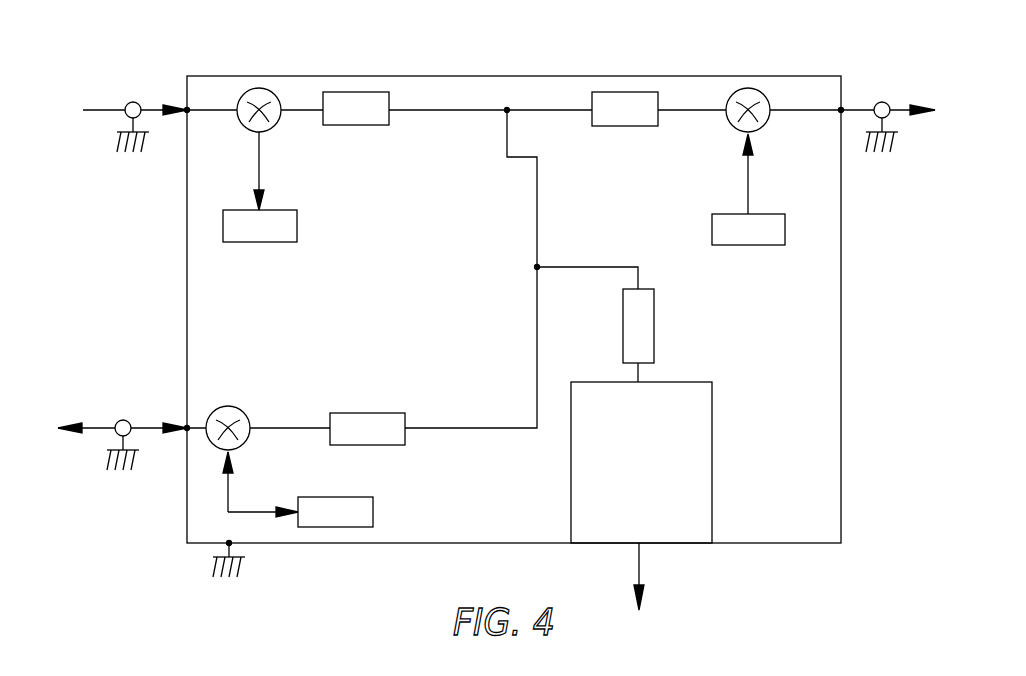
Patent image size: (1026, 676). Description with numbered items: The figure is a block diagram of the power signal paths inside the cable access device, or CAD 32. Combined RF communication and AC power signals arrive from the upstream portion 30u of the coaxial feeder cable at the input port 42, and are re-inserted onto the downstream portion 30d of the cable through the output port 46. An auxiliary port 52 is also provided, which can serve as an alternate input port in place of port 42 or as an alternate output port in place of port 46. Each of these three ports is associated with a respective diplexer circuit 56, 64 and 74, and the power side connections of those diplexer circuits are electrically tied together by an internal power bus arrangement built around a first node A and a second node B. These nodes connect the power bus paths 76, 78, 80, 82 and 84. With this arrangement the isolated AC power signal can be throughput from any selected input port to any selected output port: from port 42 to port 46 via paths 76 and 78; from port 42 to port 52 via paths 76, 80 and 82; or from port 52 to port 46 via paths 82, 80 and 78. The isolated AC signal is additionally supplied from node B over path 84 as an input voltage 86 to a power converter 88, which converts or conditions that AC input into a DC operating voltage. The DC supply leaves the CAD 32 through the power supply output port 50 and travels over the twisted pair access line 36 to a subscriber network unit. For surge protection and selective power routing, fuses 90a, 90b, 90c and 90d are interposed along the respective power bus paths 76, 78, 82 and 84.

The upstream portion of coaxial feeder cable 30u is at (100, 108).
The downstream portion of coaxial feeder cable 30d is at (903, 110).
The CAD 32 is at (843, 315).
The twisted pair access line 36 is at (638, 578).
The input port 42 is at (186, 108).
The output port 46 is at (856, 110).
The power supply output port 50 is at (641, 550).
The auxiliary port 52 is at (187, 427).
The diplexer circuit 56 is at (260, 73).
The diplexer circuit 64 is at (768, 98).
The diplexer circuit 74 is at (228, 405).
The power bus path 76 is at (440, 108).
The power bus path 78 is at (560, 108).
The power bus path 80 is at (538, 182).
The power bus path 82 is at (537, 318).
The power bus path 84 is at (625, 266).
The input voltage 86 is at (642, 378).
The power converter 88 is at (715, 432).
The fuse 90a is at (356, 92).
The fuse 90b is at (627, 92).
The fuse 90c is at (395, 413).
The fuse 90d is at (655, 313).
The first node A is at (507, 107).
The second node B is at (540, 266).